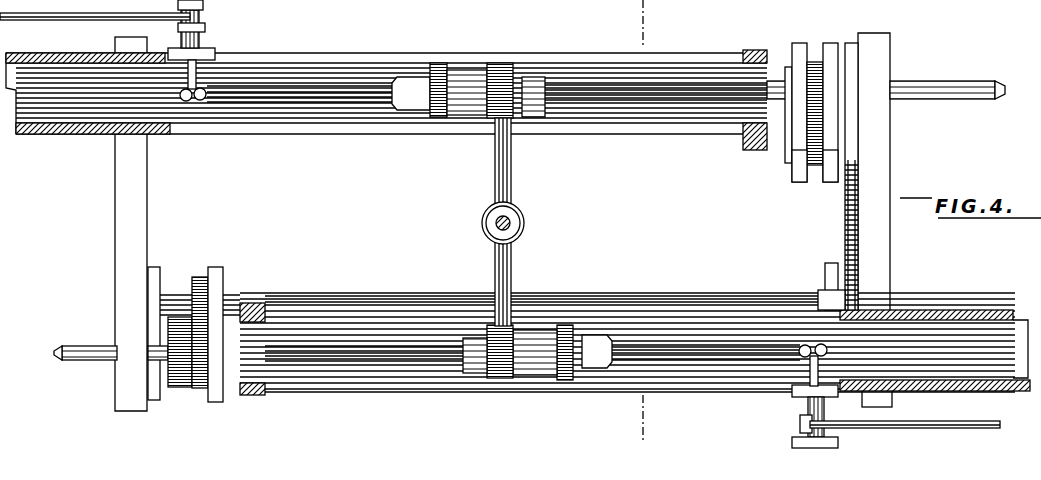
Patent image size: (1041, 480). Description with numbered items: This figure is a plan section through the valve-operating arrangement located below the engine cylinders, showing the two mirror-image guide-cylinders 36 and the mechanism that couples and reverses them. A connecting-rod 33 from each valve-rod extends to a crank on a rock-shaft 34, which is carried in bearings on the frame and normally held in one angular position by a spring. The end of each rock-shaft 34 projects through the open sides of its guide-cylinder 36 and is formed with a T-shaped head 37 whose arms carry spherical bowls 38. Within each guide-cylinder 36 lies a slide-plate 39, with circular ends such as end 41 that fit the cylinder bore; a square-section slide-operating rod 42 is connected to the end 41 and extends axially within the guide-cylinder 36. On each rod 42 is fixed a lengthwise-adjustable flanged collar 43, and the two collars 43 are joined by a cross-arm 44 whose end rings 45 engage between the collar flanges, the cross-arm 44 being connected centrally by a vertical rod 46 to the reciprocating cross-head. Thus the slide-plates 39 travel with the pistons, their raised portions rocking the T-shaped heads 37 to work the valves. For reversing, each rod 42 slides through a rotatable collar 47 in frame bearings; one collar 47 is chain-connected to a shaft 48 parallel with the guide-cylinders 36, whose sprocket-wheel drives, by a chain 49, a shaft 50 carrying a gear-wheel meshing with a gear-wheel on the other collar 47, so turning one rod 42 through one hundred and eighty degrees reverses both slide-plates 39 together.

The connecting-rod 33 is at (70, 14).
The rock-shaft 34 is at (207, 60).
The guide-cylinder 36 is at (368, 58).
The T-shaped head 37 is at (195, 102).
The bowls 38 is at (182, 90).
The slide-plate 39 is at (257, 93).
The circular end 41 is at (437, 115).
The slide-operating rod 42 is at (620, 97).
The flanged collar 43 is at (530, 77).
The cross-arm 44 is at (508, 195).
The end rings 45 is at (503, 62).
The vertical rod 46 is at (513, 227).
The collar 47 is at (820, 92).
The shaft 48 is at (300, 300).
The chain 49 is at (848, 214).
The shaft 50 is at (800, 150).